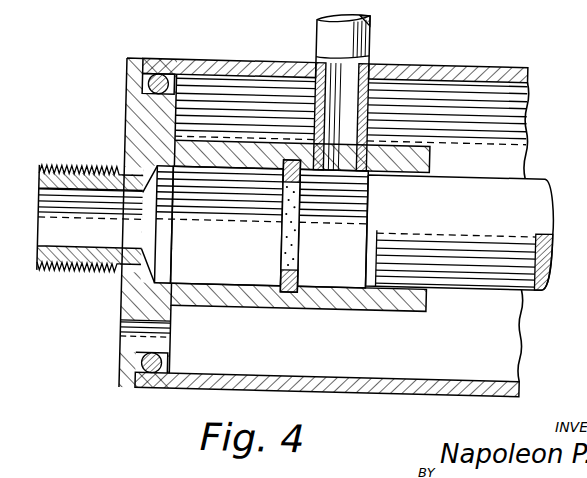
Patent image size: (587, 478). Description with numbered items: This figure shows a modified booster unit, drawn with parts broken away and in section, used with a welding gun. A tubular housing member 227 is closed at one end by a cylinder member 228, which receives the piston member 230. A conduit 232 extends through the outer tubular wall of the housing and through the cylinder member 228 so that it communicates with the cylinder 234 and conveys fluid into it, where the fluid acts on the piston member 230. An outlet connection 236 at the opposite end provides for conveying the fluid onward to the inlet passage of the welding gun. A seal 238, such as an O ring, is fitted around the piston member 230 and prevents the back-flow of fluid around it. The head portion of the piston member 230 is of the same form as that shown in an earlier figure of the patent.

The tubular housing member 227 is at (332, 213).
The cylinder member 228 is at (252, 226).
The piston member 230 is at (476, 220).
The conduit 232 is at (314, 92).
The cylinder 234 is at (253, 254).
The outlet connection 236 is at (90, 243).
The seal 238 is at (296, 255).